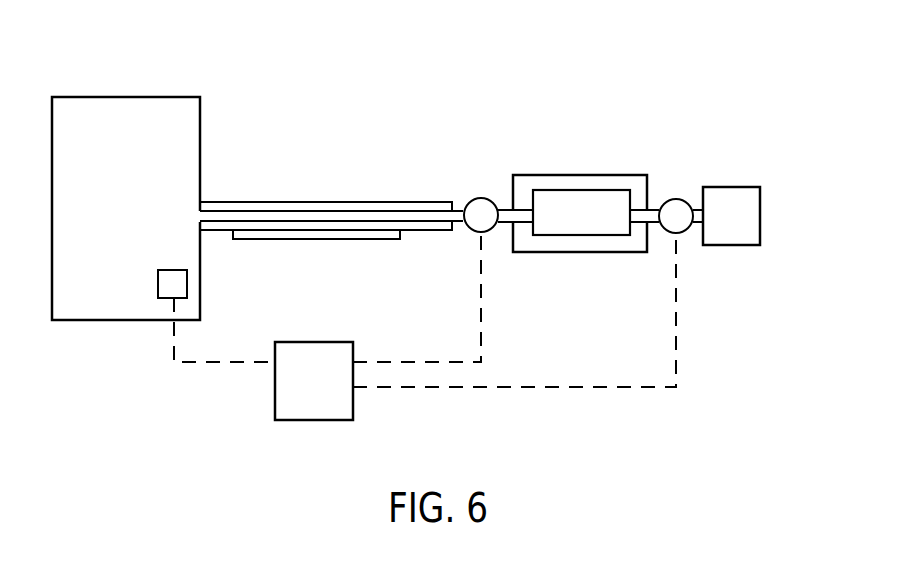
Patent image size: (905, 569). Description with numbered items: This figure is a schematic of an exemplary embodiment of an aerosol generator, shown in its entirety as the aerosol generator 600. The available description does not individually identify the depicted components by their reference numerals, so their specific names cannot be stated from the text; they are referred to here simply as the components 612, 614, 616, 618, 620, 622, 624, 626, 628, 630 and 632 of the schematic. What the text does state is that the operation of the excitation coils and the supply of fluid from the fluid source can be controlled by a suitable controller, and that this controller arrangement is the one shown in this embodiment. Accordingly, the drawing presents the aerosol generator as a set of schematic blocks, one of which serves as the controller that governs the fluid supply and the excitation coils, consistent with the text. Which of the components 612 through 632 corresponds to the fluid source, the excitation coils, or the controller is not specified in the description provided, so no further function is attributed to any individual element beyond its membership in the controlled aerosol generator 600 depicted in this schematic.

The drug delivery system 600 is at (394, 86).
The pressure source 612 is at (752, 214).
The valve 614 is at (683, 229).
The drug reservoir 616 is at (563, 200).
The valve 618 is at (478, 197).
The tube 620 is at (254, 213).
The chamber 622 is at (197, 121).
The sensor 624 is at (158, 283).
The controller 626 is at (338, 413).
The housing 628 is at (612, 238).
The sleeve 630 is at (412, 200).
The channel 632 is at (198, 215).